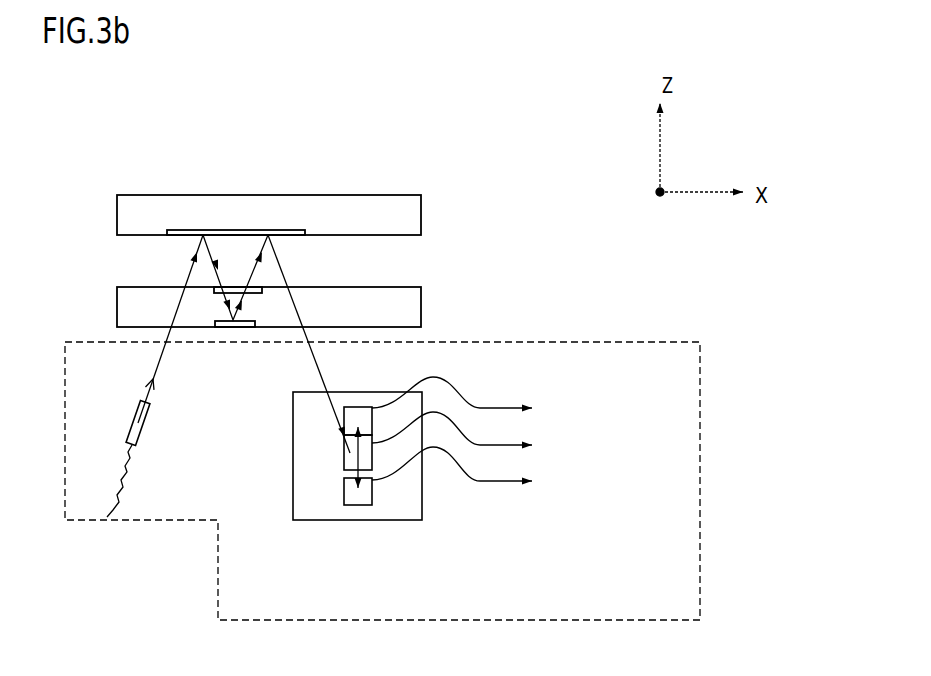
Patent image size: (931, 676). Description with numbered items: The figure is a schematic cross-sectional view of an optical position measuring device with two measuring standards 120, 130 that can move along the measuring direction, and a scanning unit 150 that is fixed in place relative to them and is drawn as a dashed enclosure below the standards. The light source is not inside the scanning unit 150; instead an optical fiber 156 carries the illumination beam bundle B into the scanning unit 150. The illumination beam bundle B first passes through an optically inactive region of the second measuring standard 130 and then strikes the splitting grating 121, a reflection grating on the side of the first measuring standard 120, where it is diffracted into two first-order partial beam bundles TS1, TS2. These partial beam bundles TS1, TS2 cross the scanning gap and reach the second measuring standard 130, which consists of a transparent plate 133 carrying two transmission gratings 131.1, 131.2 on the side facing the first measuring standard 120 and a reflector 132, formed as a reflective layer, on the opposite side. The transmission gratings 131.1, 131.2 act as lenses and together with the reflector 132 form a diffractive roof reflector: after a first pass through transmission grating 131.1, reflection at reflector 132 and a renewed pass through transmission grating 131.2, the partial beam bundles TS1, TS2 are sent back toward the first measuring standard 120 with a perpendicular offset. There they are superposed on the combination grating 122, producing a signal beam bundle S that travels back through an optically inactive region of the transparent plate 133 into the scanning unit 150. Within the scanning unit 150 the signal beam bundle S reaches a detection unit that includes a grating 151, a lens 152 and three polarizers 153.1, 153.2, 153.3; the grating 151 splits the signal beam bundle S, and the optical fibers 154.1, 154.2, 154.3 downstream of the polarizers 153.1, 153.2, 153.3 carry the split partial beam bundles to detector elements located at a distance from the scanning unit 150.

The first measuring standard 120 is at (105, 213).
The splitting grating 121 is at (277, 173).
The combination grating 122 is at (272, 233).
The second measuring standard 130 is at (273, 313).
The transmission grating 131.1 is at (320, 267).
The transmission grating 131.2 is at (260, 290).
The reflector 132 is at (220, 328).
The transparent plate 133 is at (105, 305).
The scanning unit 150 is at (700, 573).
The grating 151 is at (337, 505).
The lens 152 is at (337, 505).
The polarizer 153.1 is at (337, 505).
The polarizer 153.2 is at (337, 505).
The polarizer 153.3 is at (340, 522).
The optical fiber 154.1 is at (482, 408).
The optical fiber 154.2 is at (492, 442).
The optical fiber 154.3 is at (490, 483).
The optical fiber 156 is at (137, 440).
The illumination beam bundle B is at (195, 268).
The signal beam bundle S is at (312, 355).
The partial beam bundle TS1 is at (217, 217).
The partial beam bundle TS2 is at (217, 243).